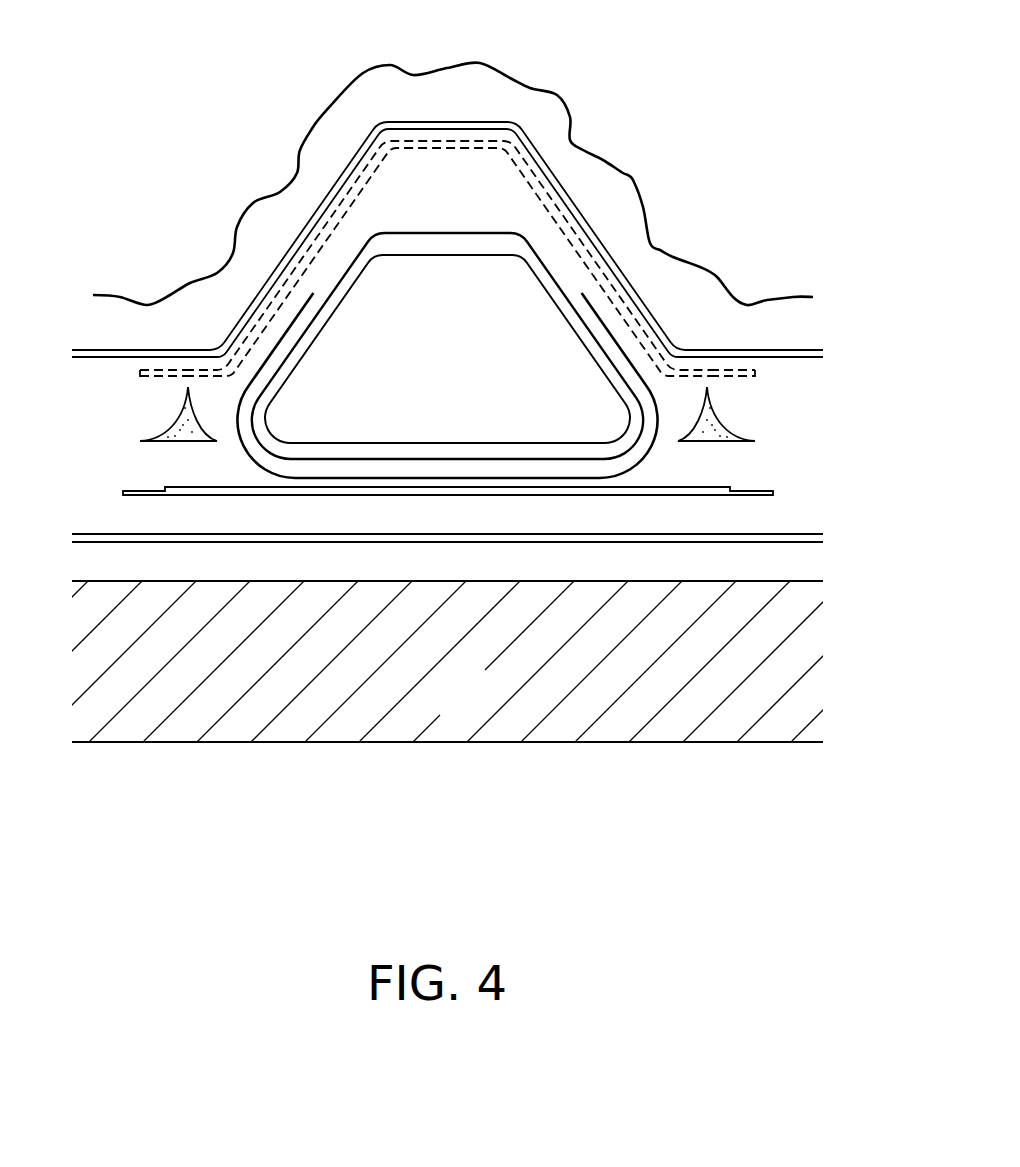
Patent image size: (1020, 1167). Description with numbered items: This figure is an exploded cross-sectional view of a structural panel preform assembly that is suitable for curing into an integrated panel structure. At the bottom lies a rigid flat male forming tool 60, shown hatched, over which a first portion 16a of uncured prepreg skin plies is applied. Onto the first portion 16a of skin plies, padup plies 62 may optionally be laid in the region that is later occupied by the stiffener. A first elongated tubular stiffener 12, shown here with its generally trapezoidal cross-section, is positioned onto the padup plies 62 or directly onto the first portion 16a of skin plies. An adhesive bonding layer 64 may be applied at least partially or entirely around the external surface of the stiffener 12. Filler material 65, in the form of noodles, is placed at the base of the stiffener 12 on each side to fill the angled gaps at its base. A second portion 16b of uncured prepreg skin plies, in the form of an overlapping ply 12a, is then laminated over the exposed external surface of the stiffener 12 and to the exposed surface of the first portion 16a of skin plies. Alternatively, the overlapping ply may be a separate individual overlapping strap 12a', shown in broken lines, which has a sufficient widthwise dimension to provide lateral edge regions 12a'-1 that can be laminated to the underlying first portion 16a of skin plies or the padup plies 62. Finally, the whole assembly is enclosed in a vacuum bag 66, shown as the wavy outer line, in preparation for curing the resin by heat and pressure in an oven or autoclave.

The first elongated tubular stiffener 12 is at (434, 247).
The overlapping ply 12a is at (447, 183).
The overlapping strap 12a' is at (447, 219).
The lateral edge region 12a'-1 is at (411, 307).
The first portion of skin plies 16a is at (790, 537).
The second portion of skin plies 16b is at (805, 349).
The rigid flat male forming tool 60 is at (450, 694).
The padup plies 62 is at (727, 488).
The adhesive bonding layer 64 is at (617, 340).
The filler material 65 is at (176, 431).
The vacuum bag 66 is at (191, 283).